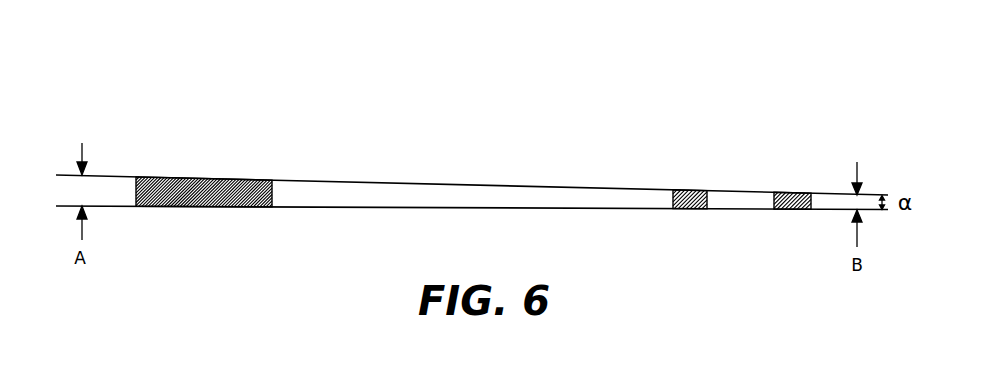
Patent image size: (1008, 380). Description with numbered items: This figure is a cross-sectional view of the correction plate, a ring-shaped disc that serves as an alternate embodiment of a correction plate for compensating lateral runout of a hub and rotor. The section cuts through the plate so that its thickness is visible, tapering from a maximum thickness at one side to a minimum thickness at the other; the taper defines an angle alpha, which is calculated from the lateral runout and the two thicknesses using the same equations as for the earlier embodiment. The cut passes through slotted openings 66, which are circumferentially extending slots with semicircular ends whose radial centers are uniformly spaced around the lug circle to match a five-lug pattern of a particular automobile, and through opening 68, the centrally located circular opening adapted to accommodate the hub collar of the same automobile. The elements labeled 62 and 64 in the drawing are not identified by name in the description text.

The substrate top surface 62 is at (521, 212).
The substrate bottom surface 64 is at (597, 187).
The slotted openings 66 is at (710, 198).
The opening 68 is at (274, 190).